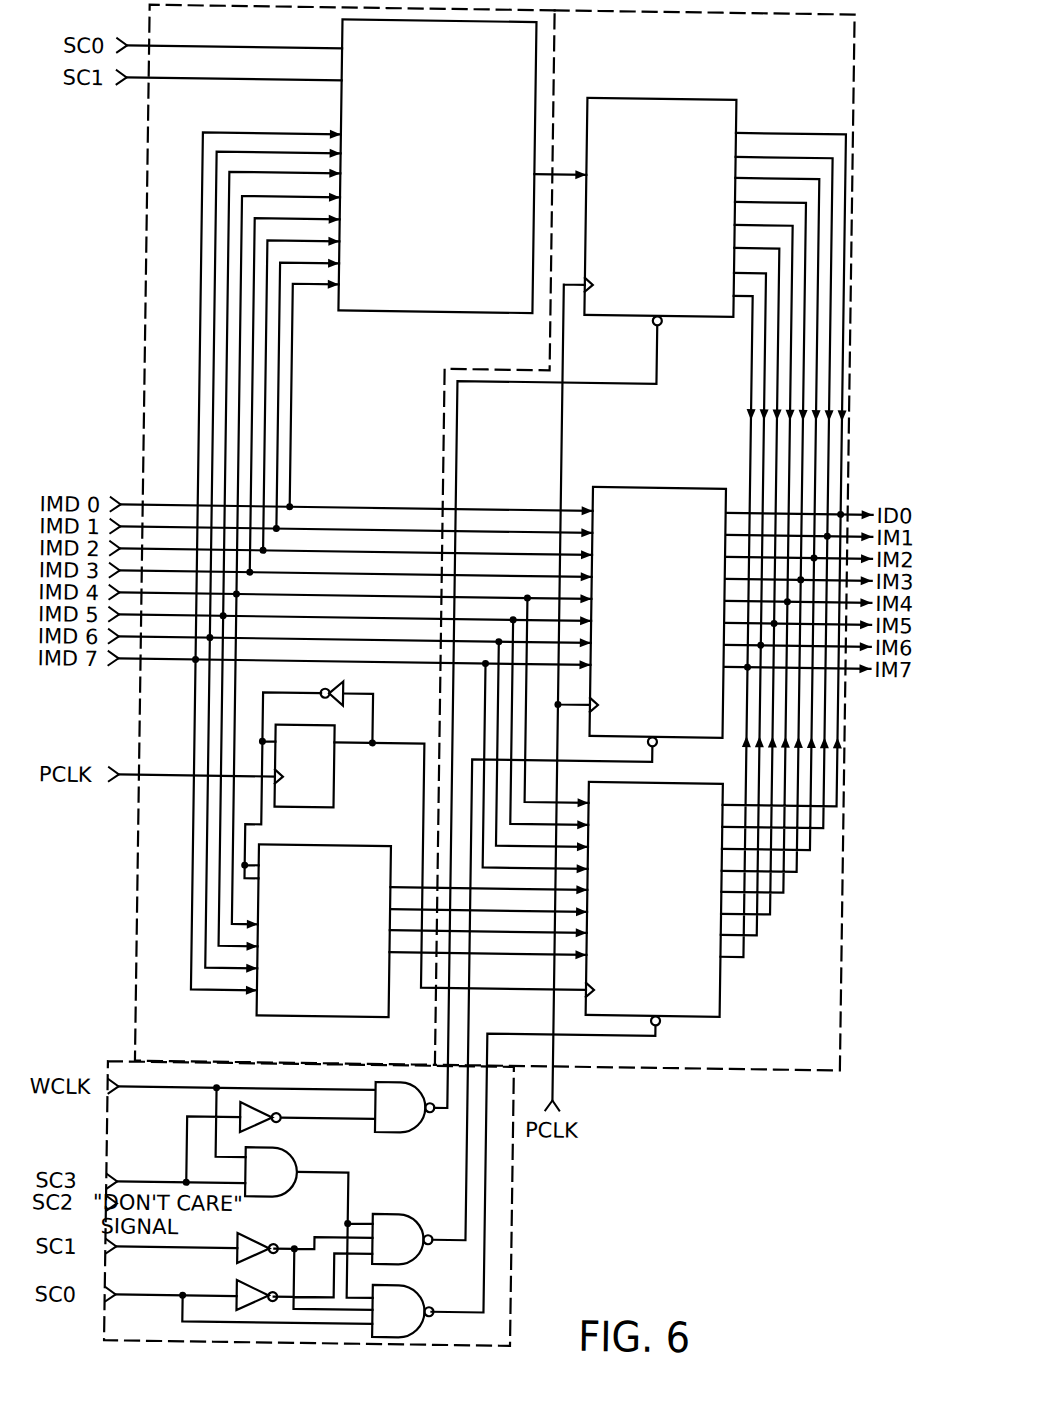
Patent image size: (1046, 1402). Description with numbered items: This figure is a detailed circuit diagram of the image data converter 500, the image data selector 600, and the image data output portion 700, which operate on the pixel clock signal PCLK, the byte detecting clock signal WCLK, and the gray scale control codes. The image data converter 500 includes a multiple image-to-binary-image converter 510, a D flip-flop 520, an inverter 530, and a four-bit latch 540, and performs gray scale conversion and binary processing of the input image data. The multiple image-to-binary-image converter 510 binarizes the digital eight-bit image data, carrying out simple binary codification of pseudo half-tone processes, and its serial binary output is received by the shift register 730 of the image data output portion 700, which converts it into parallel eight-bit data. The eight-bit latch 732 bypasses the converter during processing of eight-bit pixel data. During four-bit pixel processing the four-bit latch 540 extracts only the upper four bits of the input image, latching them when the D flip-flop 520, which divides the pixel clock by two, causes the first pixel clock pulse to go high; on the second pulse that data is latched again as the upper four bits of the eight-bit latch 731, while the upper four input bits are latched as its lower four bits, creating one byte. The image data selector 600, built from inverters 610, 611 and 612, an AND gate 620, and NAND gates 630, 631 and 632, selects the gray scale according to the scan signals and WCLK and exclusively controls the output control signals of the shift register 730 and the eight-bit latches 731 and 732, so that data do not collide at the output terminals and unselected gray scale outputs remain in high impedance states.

The image data converter 500 is at (168, 170).
The multiple image-to-binary-image converter 510 is at (413, 318).
The D flip-flop 520 is at (334, 803).
The inverter 530 is at (345, 687).
The 4-bit latch 540 is at (262, 1018).
The image data selector 600 is at (513, 1270).
The inverter 610 is at (245, 1294).
The inverter 611 is at (262, 1243).
The inverter 612 is at (270, 1130).
The AND gate 620 is at (295, 1198).
The NAND gate 630 is at (393, 1214).
The NAND gate 631 is at (420, 1288).
The NAND gate 632 is at (398, 1134).
The image data output portion 700 is at (837, 900).
The shift register 730 is at (604, 316).
The 8-bit latch 731 is at (724, 987).
The 8-bit latch 732 is at (627, 484).